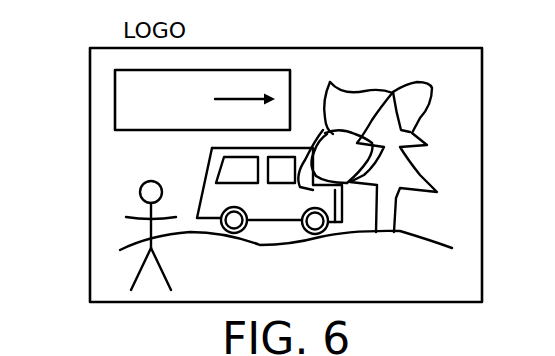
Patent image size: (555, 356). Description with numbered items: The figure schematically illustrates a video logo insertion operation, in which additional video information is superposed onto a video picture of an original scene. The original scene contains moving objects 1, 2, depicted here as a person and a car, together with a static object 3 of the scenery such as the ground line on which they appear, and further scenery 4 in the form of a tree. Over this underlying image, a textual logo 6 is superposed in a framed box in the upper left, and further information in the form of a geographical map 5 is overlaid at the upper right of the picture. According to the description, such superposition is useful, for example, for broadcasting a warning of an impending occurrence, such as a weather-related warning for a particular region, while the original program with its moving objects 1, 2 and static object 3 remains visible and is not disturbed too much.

The moving object 1 is at (165, 277).
The moving object 2 is at (292, 223).
The static object 3 is at (395, 228).
The deciduous tree 4 is at (355, 92).
The geographical map 5 is at (430, 100).
The textual logo 6 is at (115, 93).